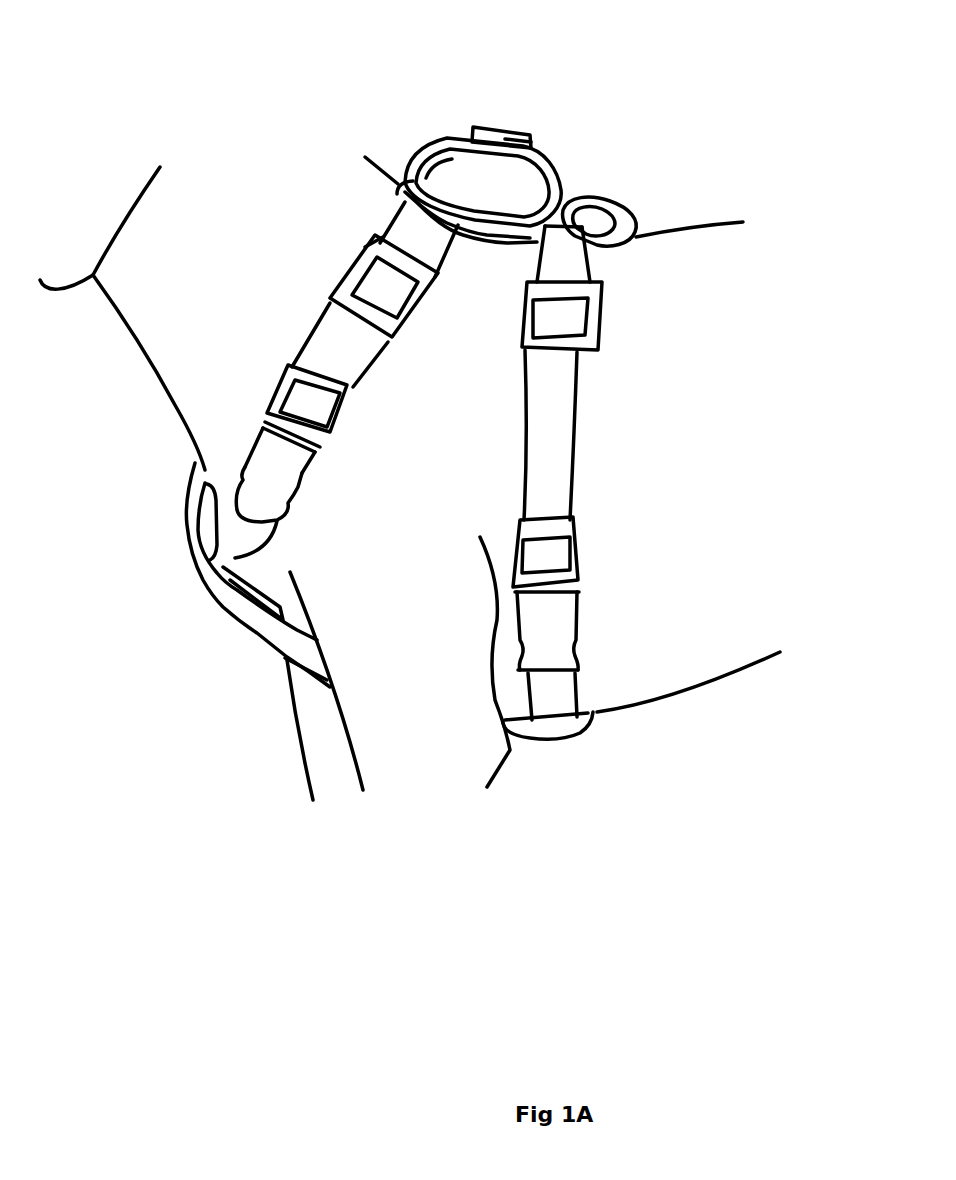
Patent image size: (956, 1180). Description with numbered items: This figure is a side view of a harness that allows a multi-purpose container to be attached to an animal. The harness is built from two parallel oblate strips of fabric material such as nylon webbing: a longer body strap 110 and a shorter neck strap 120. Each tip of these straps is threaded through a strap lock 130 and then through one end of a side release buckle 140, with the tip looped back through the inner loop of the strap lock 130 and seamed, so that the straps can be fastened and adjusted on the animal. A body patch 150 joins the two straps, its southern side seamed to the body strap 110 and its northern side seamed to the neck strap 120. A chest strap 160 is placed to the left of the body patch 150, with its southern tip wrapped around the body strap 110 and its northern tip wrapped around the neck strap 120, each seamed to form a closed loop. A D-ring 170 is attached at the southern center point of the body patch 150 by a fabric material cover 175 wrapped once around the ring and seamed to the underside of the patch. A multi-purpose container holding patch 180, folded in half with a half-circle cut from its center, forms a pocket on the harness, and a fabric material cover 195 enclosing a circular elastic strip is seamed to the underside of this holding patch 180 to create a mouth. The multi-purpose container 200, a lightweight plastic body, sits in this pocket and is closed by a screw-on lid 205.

The body strap 110 is at (573, 468).
The neck strap 120 is at (373, 383).
The strap lock 130 is at (605, 329).
The side release buckle 140 is at (585, 620).
The body patch 150 is at (400, 180).
The chest strap 160 is at (250, 648).
The D-ring 170 is at (633, 210).
The fabric material cover 175 is at (587, 223).
The multi-purpose container holding patch 180 is at (440, 133).
The fabric material cover 195 is at (528, 150).
The multi-purpose container 200 is at (452, 163).
The screw-on lid 205 is at (508, 127).